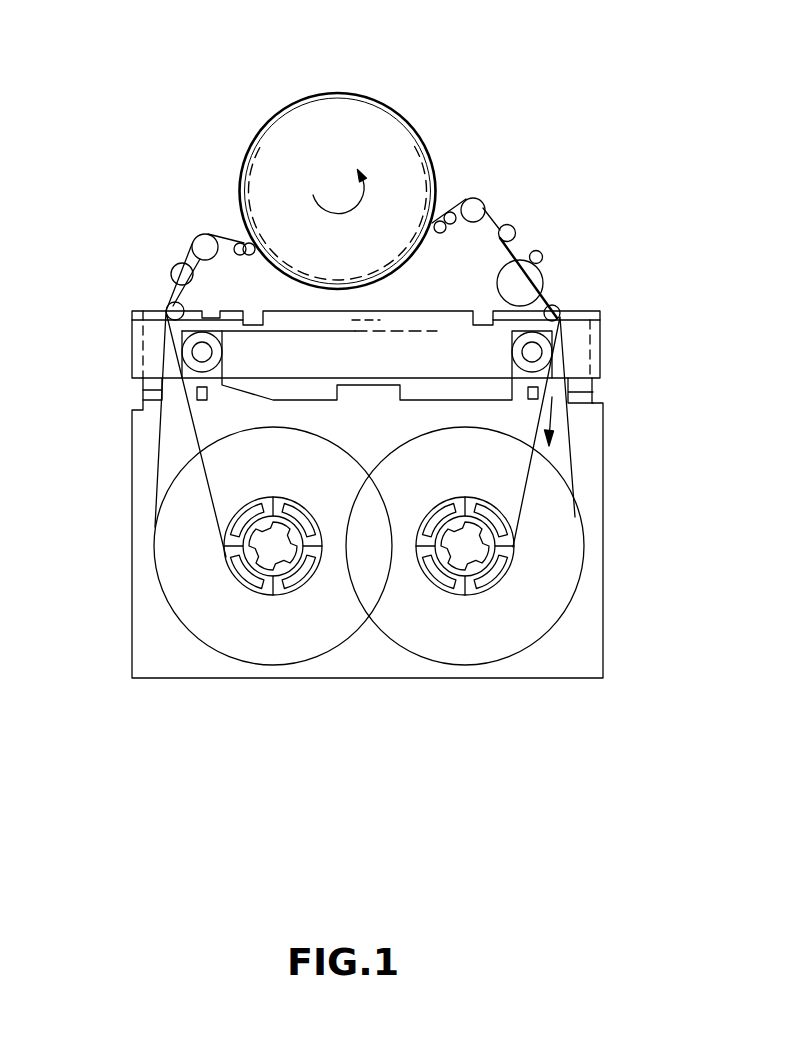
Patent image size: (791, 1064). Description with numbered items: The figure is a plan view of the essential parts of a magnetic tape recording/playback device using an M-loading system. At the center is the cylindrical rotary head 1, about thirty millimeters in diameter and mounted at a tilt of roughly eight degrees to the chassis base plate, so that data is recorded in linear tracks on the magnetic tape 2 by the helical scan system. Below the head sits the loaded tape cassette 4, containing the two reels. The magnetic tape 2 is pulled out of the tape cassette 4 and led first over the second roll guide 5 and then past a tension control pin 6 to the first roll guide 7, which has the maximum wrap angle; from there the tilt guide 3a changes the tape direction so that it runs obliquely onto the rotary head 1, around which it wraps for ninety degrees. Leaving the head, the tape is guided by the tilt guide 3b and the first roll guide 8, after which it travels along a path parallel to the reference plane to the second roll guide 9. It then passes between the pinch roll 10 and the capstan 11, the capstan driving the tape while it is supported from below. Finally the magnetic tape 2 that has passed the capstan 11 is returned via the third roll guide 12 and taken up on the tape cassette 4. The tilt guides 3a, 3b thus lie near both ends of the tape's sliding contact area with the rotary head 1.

The rotary head 1 is at (368, 120).
The magnetic tape 2 is at (193, 427).
The tilt guide 3a is at (237, 243).
The tilt guide 3b is at (447, 211).
The tape cassette 4 is at (603, 540).
The second roll guide 5 is at (168, 307).
The tension control pin 6 is at (176, 268).
The first roll guide 7 is at (200, 240).
The first roll guide 8 is at (477, 208).
The second roll guide 9 is at (515, 230).
The pinch roll 10 is at (500, 283).
The capstan 11 is at (542, 255).
The third roll guide 12 is at (560, 318).